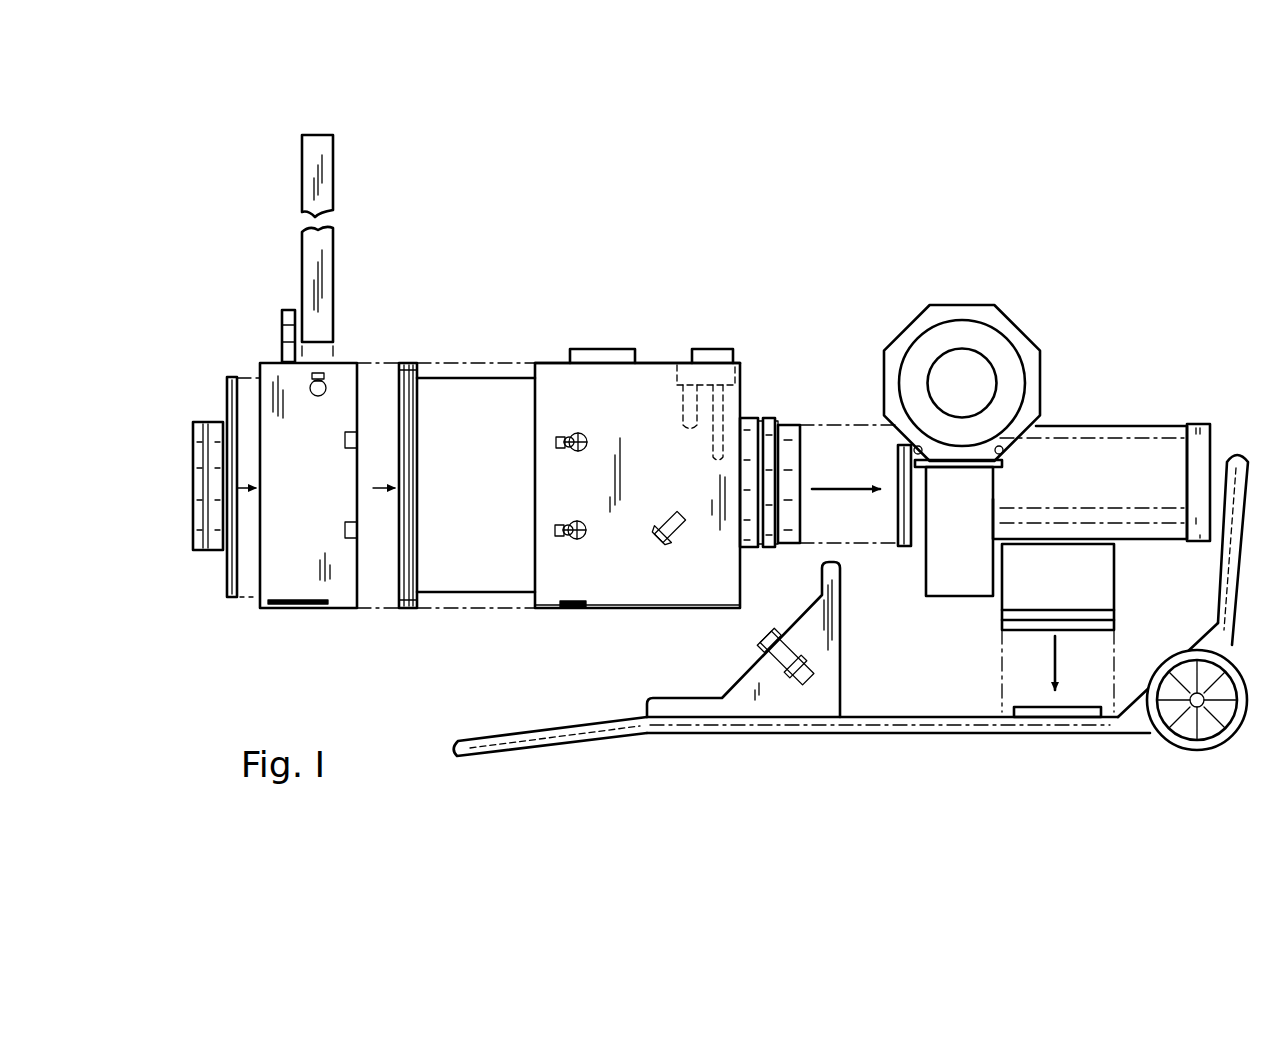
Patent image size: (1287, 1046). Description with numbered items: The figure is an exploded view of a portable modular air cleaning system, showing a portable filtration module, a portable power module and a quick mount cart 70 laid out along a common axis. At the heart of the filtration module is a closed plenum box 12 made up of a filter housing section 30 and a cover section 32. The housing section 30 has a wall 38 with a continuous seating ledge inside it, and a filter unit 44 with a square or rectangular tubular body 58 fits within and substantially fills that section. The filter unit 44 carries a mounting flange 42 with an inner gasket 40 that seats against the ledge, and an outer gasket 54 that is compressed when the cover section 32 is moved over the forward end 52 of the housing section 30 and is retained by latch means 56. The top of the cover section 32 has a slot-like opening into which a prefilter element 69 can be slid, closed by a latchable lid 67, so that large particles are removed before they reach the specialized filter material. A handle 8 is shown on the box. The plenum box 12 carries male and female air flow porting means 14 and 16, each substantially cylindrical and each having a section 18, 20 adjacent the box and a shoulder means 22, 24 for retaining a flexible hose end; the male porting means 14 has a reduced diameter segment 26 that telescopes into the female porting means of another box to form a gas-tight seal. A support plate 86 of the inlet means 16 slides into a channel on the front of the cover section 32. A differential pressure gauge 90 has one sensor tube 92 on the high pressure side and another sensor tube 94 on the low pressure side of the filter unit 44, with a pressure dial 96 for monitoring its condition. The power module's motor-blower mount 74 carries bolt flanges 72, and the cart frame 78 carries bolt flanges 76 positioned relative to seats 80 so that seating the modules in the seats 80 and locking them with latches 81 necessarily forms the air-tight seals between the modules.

The handle 8 is at (682, 537).
The closed plenum box 12 is at (576, 624).
The male air flow porting means 14 is at (814, 464).
The female air flow porting means 16 is at (180, 570).
The section of porting means 18 is at (218, 553).
The section of porting means 20 is at (748, 548).
The shoulder means 22 is at (218, 424).
The shoulder means 24 is at (768, 535).
The reduced diameter segment 26 is at (787, 433).
The filter housing section 30 is at (627, 592).
The cover section 32 is at (338, 362).
The wall 38 is at (640, 360).
The inner gasket 40 is at (420, 585).
The mounting flange 42 is at (395, 520).
The filter unit 44 is at (465, 355).
The forward end 52 is at (546, 361).
The outer gasket 54 is at (402, 372).
The latch means 56 is at (330, 396).
The tubular body 58 is at (1080, 378).
The latchable lid 67 is at (282, 318).
The prefilter element 69 is at (335, 262).
The quick mount cart 70 is at (672, 764).
The bolt flanges 72 is at (1115, 612).
The motor-blower mount 74 is at (1012, 600).
The bolt flanges 76 is at (1059, 705).
The cart frame 78 is at (939, 733).
The seats 80 is at (780, 703).
The latches 81 is at (760, 657).
The support plate 86 is at (236, 378).
The differential pressure gauge 90 is at (720, 380).
The sensor tube 92 is at (712, 443).
The sensor tube 94 is at (681, 403).
The pressure dial 96 is at (702, 350).